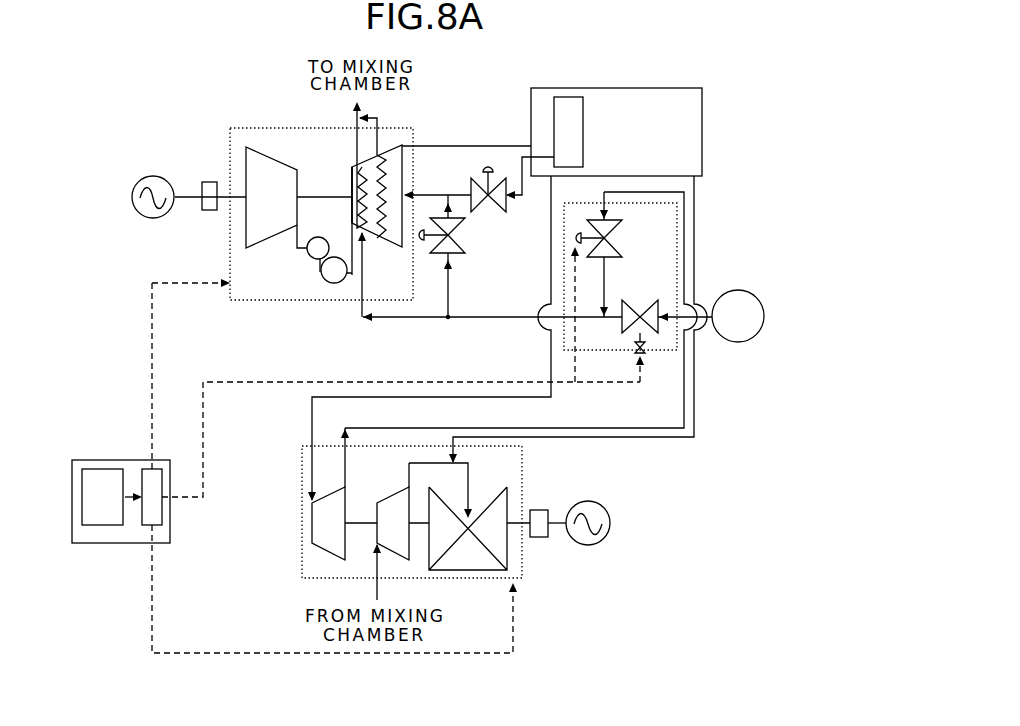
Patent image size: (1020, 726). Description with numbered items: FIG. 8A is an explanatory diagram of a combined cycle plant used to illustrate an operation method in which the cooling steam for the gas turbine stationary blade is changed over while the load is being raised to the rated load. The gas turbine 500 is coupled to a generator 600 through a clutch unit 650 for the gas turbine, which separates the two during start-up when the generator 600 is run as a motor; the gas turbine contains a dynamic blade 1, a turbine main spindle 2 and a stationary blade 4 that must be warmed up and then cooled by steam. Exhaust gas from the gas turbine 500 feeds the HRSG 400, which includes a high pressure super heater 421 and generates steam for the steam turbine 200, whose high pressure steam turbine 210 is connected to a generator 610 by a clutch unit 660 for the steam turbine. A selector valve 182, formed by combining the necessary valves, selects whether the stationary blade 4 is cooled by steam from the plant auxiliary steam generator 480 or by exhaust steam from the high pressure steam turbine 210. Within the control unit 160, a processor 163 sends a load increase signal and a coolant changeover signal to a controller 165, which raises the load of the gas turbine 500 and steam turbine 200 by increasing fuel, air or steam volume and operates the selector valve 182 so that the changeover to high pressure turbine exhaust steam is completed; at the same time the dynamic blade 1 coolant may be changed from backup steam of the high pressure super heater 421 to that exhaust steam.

The gas turbine 500 is at (237, 87).
The dynamic blade 1 is at (378, 153).
The turbine main spindle 2 is at (394, 200).
The stationary blade 4 is at (352, 172).
The generator 600 is at (151, 177).
The clutch unit for the gas turbine 650 is at (208, 182).
The HRSG (heat recovery steam generator) 400 is at (610, 88).
The high pressure super heater 421 is at (550, 93).
The selector valve 182 is at (678, 229).
The plant auxiliary steam generator 480 is at (740, 342).
The control unit 160 is at (79, 427).
The processor 163 is at (100, 470).
The controller 165 is at (155, 469).
The steam turbine 200 is at (289, 450).
The high pressure steam turbine 210 is at (320, 542).
The generator 610 is at (538, 510).
The clutch unit for the steam turbine 660 is at (592, 501).